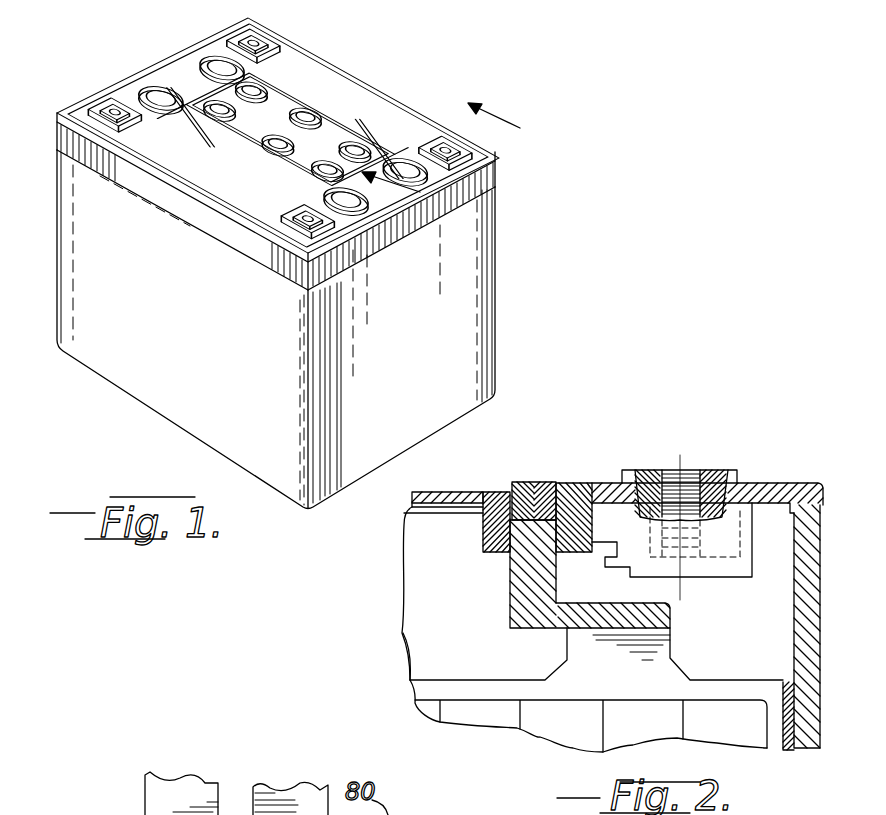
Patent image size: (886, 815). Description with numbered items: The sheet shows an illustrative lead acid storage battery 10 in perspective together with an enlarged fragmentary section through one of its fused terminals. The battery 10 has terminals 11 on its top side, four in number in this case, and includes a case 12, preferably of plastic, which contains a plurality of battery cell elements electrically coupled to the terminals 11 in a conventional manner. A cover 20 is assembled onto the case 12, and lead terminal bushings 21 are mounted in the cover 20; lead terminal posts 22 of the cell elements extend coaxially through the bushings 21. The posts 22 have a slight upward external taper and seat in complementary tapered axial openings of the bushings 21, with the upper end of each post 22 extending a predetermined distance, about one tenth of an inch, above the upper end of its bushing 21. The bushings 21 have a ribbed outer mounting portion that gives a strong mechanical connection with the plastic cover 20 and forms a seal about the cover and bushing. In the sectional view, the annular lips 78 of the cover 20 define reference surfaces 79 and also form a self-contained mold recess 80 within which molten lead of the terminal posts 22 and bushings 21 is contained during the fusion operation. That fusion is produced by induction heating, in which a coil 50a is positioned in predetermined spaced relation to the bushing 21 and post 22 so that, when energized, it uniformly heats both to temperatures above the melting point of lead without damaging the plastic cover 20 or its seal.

In FIG. 1, the lead acid storage battery 10 is at (537, 213).
In FIG. 2, the lead acid storage battery 10 is at (388, 629).
In FIG. 1, the terminals 11 is at (108, 108).
In FIG. 2, the terminals 11 is at (641, 470).
In FIG. 1, the case 12 is at (458, 312).
In FIG. 2, the case 12 is at (818, 660).
In FIG. 1, the cover 20 is at (253, 245).
In FIG. 2, the cover 20 is at (790, 483).
In FIG. 2, the terminal bushings 21 is at (490, 541).
In FIG. 1, the terminal posts 22 is at (218, 65).
In FIG. 2, the terminal posts 22 is at (528, 569).
In FIG. 2, the annular lips 78 is at (588, 484).
In FIG. 2, the reference surfaces 79 is at (462, 814).
In FIG. 2, the mold recess 80 is at (511, 484).
In FIG. 2, the coil 50a is at (165, 814).